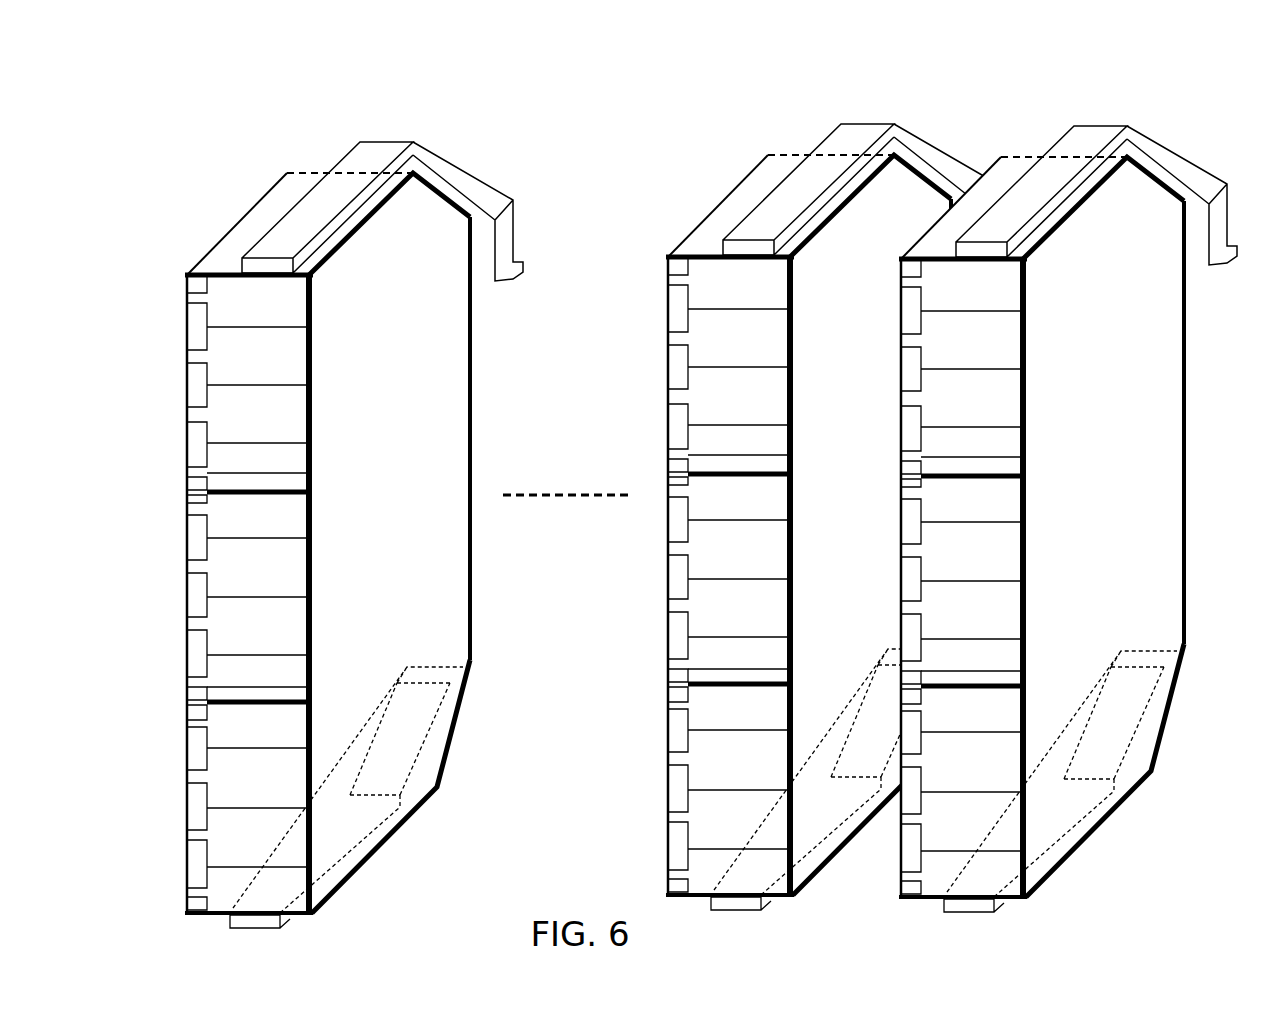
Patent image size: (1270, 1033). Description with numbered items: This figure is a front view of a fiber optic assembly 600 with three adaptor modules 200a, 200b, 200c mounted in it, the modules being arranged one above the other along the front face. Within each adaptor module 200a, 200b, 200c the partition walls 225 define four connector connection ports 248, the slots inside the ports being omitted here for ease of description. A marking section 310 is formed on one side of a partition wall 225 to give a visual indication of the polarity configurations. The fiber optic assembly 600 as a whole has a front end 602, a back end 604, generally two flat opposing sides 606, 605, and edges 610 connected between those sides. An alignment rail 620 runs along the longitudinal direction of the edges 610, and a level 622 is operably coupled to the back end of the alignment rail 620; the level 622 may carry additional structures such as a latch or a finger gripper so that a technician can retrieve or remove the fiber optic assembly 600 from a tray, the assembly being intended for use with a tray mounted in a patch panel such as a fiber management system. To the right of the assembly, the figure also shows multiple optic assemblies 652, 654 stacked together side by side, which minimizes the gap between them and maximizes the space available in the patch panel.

The fiber optic assembly 600 is at (457, 140).
The front end 602 is at (173, 318).
The back end 604 is at (485, 438).
The flat opposing side 605 is at (192, 510).
The flat opposing side 606 is at (437, 533).
The edge 610 is at (258, 230).
The alignment rail 620 is at (330, 197).
The level 622 is at (512, 228).
The adaptor module 200a is at (344, 326).
The adaptor module 200b is at (330, 580).
The adaptor module 200c is at (327, 737).
The connector connection port 248 is at (272, 352).
The partition wall 225 is at (315, 388).
The marking section 310 is at (200, 385).
The optic assembly 652 is at (805, 108).
The optic assembly 654 is at (1080, 115).